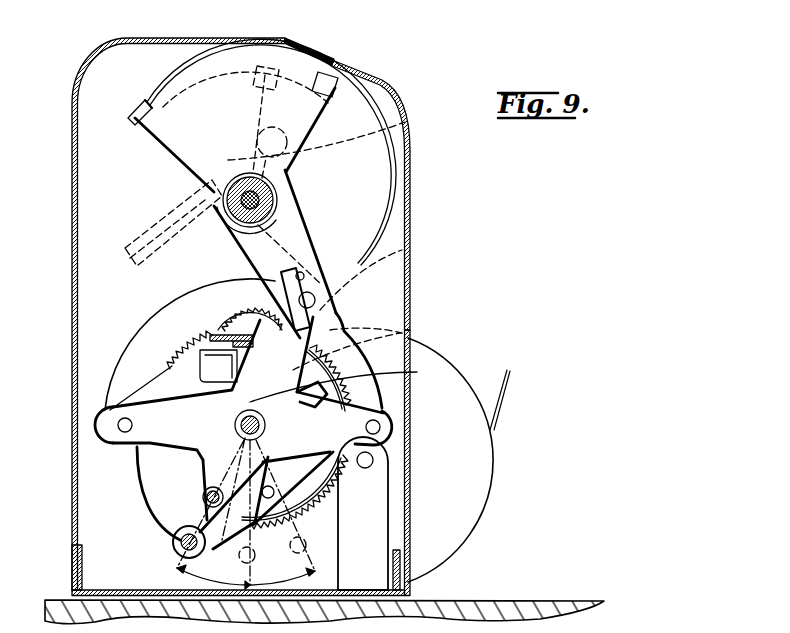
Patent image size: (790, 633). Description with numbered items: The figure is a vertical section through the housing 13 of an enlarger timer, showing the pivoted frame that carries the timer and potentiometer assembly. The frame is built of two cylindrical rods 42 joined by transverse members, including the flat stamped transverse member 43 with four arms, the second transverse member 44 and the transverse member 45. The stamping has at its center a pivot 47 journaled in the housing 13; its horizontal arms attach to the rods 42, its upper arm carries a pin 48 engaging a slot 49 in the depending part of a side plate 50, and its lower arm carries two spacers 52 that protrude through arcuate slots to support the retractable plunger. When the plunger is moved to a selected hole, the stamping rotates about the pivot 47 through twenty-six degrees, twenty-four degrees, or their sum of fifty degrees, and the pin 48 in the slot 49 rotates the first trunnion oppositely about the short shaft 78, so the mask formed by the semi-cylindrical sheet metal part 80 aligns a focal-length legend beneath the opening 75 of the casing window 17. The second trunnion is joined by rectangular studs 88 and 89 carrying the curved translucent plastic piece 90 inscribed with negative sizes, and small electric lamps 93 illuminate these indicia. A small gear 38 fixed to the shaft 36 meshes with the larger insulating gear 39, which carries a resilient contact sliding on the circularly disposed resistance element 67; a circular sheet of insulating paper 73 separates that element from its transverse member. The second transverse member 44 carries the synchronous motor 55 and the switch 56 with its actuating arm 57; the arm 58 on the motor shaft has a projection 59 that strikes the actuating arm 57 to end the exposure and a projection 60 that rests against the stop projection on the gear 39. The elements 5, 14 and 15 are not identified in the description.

The ground surface 5 is at (515, 600).
The housing 13 is at (72, 232).
The wheel 14 is at (489, 503).
The needle lever 15 is at (505, 398).
The casing window 17 is at (326, 58).
The shaft 36 is at (366, 460).
The gear 38 is at (405, 470).
The larger gear 39 is at (314, 481).
The cylindrical rods 42 is at (118, 424).
The transverse member 43 is at (130, 435).
The second transverse member 44 is at (157, 385).
The transverse member 45 is at (147, 338).
The pivot 47 is at (237, 426).
The pin 48 is at (334, 320).
The slot 49 is at (318, 283).
The side plate 50 is at (300, 232).
The spacers 52 is at (180, 537).
The synchronous motor 55 is at (147, 460).
The switch 56 is at (218, 343).
The switch actuating arm 57 is at (248, 320).
The arm 58 is at (318, 408).
The projection 59 is at (418, 372).
The projection 60 is at (402, 335).
The resistance element 67 is at (313, 510).
The insulating paper sheet 73 is at (312, 530).
The opening 75 is at (293, 38).
The short shaft 78 is at (266, 197).
The semi-cylindrical sheet metal part 80 is at (157, 98).
The rectangular stud 88 is at (258, 80).
The rectangular stud 89 is at (403, 250).
The translucent plastic piece 90 is at (380, 186).
The electric lamps 93 is at (405, 125).